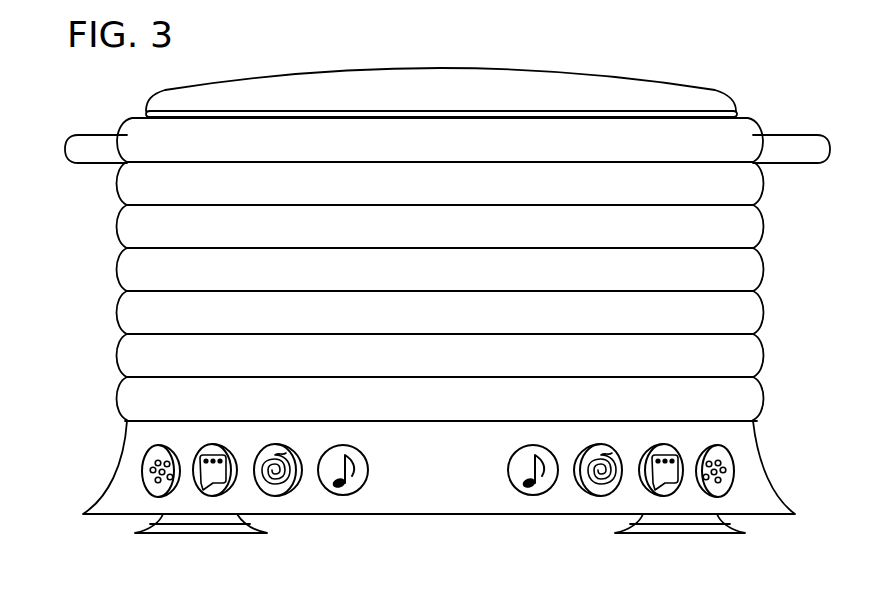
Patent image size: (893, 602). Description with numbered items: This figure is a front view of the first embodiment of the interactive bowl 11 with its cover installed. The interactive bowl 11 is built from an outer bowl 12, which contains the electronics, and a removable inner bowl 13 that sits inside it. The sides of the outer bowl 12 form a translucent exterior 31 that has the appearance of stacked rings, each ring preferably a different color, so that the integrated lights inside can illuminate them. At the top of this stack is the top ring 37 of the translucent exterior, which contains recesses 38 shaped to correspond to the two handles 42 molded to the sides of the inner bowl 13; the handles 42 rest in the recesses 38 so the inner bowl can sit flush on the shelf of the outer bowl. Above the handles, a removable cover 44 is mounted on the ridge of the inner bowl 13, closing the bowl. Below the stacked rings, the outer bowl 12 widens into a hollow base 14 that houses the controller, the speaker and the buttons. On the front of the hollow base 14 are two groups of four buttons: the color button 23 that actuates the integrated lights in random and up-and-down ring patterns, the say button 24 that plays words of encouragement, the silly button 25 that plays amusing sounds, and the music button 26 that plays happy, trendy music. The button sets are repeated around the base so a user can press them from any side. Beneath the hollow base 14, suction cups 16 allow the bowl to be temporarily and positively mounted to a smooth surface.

The interactive bowl 11 is at (777, 89).
The outer bowl 12 is at (468, 291).
The removable inner bowl 13 is at (802, 163).
The hollow base 14 is at (748, 459).
The suction cups 16 is at (248, 533).
The color button 23 is at (150, 485).
The say button 24 is at (200, 490).
The silly button 25 is at (264, 488).
The music button 26 is at (342, 496).
The translucent exterior 31 is at (718, 223).
The top ring 37 is at (577, 137).
The recesses 38 is at (118, 134).
The handles 42 is at (66, 146).
The removable cover 44 is at (473, 88).